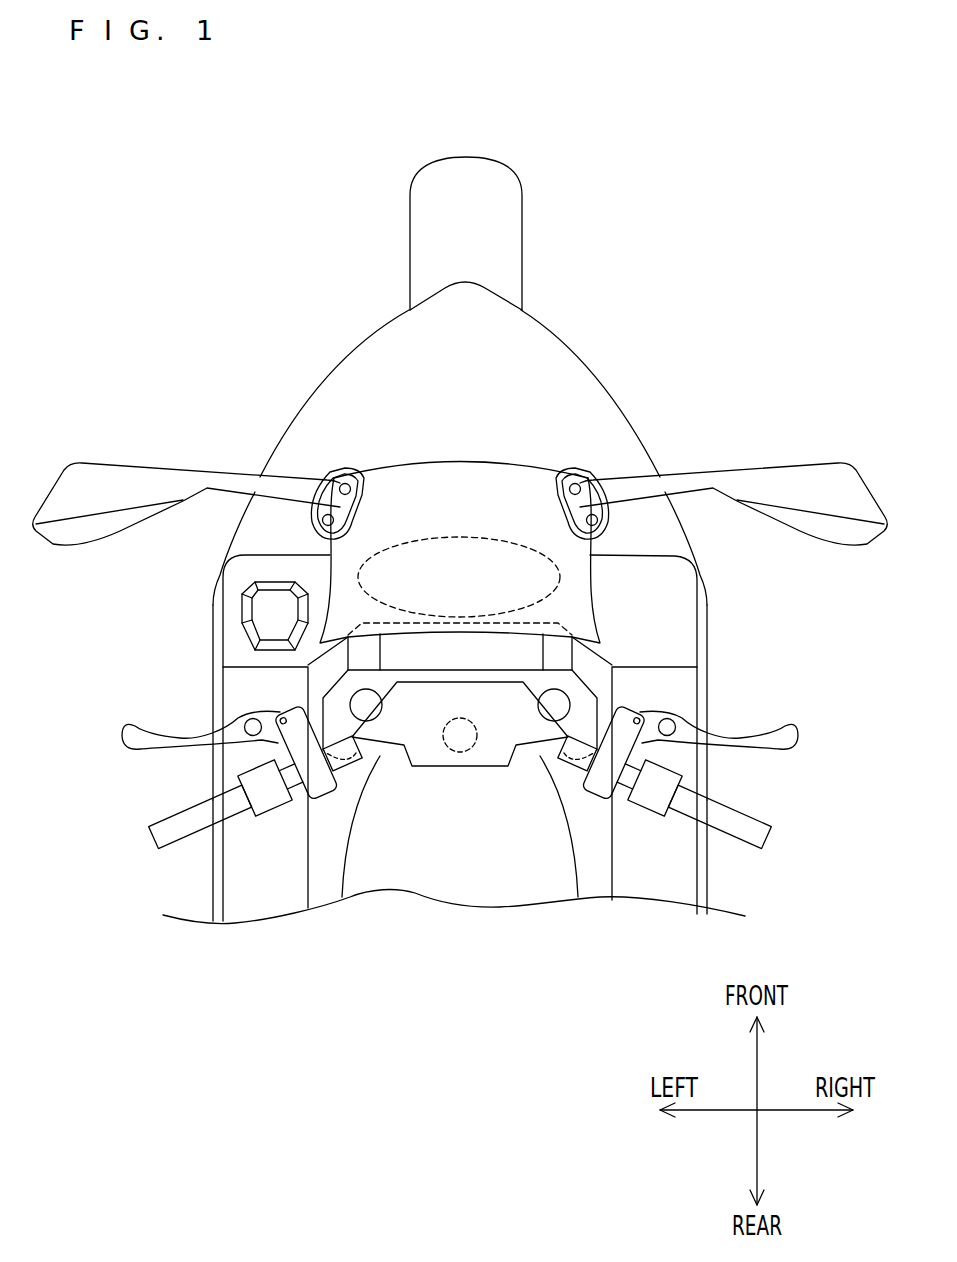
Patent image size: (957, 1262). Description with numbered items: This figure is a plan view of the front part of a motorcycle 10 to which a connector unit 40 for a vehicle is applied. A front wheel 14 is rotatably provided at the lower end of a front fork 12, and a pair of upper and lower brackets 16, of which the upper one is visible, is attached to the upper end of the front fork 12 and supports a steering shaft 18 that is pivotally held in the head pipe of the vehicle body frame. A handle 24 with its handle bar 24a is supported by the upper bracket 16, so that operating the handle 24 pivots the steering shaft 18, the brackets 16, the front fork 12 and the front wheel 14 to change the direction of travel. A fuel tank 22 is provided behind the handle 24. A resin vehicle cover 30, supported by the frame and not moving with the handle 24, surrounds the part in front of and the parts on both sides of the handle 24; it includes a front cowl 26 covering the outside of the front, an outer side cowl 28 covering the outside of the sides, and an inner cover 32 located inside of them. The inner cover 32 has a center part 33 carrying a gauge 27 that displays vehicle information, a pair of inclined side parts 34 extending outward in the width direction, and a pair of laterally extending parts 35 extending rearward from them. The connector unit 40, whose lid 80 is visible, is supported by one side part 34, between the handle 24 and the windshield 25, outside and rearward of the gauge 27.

The motorcycle 10 is at (507, 379).
The front fork 12 is at (381, 659).
The front wheel 14 is at (493, 162).
The brackets 16 is at (460, 752).
The steering shaft 18 is at (459, 752).
The fuel tank 22 is at (518, 900).
The handle 24 is at (460, 785).
The handle bar 24a is at (560, 752).
The windshield 25 is at (481, 553).
The front cowl 26 is at (573, 386).
The gauge 27 is at (476, 537).
The outer side cowl 28 is at (213, 887).
The vehicle cover 30 is at (447, 706).
The inner cover 32 is at (226, 571).
The center part 33 is at (460, 651).
The side parts 34 is at (707, 608).
The laterally extending parts 35 is at (215, 768).
The connector unit 40 is at (236, 580).
The lid 80 is at (273, 605).